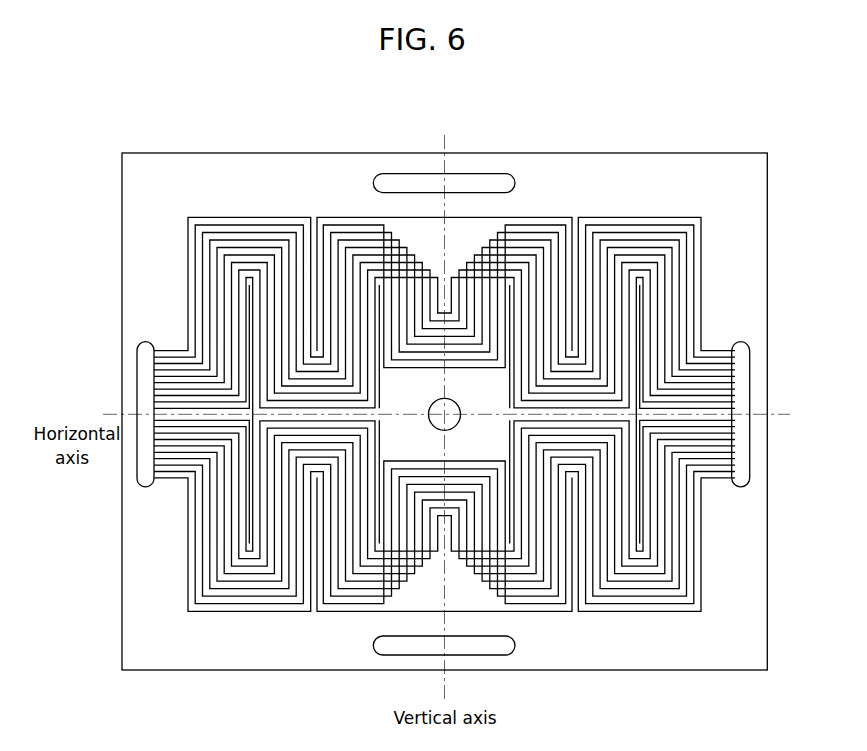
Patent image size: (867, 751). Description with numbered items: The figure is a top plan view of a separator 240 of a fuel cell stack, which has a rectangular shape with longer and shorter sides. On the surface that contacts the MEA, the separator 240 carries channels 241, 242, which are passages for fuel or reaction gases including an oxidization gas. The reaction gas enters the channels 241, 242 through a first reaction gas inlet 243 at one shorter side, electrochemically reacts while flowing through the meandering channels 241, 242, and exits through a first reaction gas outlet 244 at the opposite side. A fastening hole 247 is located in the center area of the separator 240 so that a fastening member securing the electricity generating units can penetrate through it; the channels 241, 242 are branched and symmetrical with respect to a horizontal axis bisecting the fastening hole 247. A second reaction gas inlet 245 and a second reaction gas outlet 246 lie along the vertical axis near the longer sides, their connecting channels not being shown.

The separator 240 is at (304, 147).
The channel 241 is at (221, 221).
The channel 242 is at (232, 608).
The first reaction gas inlet 243 is at (146, 384).
The first reaction gas outlet 244 is at (740, 372).
The second reaction gas inlet 245 is at (470, 180).
The second reaction gas outlet 246 is at (485, 650).
The fastening hole 247 is at (447, 399).